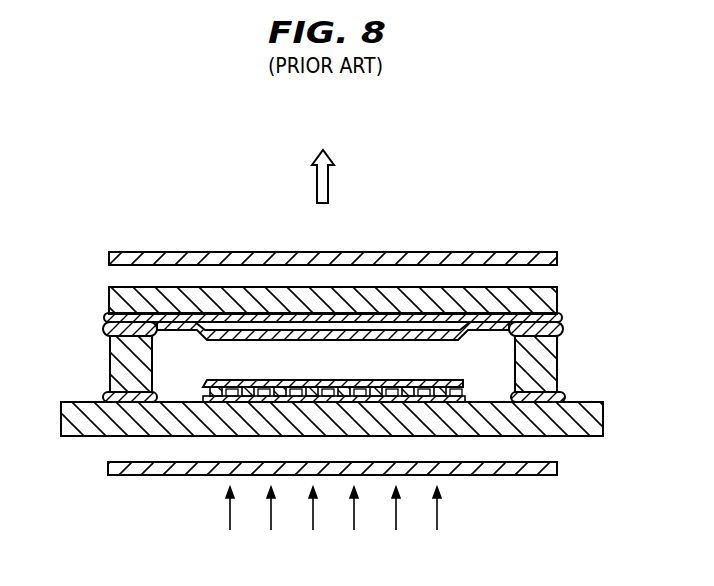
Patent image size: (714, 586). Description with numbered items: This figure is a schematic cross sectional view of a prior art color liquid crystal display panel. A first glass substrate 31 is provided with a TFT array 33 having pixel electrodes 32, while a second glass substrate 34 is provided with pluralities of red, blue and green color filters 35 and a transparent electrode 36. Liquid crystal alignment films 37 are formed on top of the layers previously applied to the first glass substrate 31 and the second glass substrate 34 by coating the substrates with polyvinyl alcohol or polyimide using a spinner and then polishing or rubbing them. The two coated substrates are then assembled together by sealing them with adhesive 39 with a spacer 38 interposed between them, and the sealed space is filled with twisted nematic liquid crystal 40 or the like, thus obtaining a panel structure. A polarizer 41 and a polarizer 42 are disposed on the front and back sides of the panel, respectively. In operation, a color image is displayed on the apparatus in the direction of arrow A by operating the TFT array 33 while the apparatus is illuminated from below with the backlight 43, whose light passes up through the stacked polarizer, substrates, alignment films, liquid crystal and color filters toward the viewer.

The first glass substrate 31 is at (603, 419).
The pixel electrodes 32 is at (462, 386).
The TFT array 33 is at (478, 399).
The second glass substrate 34 is at (108, 300).
The color filters 35 is at (233, 320).
The transparent electrode 36 is at (108, 318).
The liquid crystal alignment films 37 is at (357, 327).
The spacer 38 is at (109, 370).
The adhesive 39 is at (106, 330).
The twisted nematic liquid crystal 40 is at (492, 353).
The polarizer 41 is at (108, 468).
The polarizer 42 is at (545, 252).
The backlight 43 is at (229, 510).
The arrow A is at (329, 154).